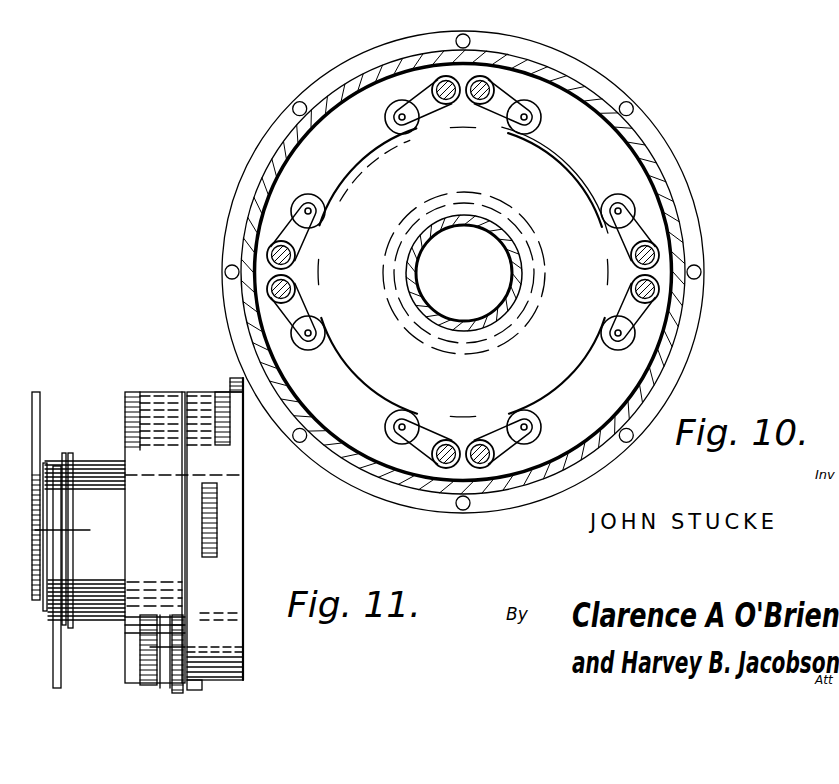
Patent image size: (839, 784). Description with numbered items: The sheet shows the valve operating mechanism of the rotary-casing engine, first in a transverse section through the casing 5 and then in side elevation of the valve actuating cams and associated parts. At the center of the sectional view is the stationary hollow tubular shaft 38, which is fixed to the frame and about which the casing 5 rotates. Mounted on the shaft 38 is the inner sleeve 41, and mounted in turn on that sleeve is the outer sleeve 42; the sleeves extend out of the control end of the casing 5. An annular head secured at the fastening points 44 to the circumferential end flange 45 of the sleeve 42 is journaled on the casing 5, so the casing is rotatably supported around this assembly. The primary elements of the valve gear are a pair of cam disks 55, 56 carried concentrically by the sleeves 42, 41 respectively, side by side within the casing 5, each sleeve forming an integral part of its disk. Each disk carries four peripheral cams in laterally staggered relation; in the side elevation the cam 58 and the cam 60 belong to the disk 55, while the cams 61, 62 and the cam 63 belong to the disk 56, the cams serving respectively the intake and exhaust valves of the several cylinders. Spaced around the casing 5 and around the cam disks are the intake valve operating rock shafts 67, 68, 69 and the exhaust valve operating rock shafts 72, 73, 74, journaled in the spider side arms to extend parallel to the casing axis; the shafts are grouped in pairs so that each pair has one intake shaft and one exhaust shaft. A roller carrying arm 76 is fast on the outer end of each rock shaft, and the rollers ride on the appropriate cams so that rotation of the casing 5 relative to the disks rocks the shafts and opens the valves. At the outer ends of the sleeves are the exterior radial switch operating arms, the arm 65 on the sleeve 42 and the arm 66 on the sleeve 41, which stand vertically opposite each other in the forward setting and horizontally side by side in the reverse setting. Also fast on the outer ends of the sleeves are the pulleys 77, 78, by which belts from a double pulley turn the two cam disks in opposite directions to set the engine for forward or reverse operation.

In FIG. 10, the casing 5 is at (648, 144).
In FIG. 10, the hollow tubular shaft 38 is at (493, 235).
In FIG. 10, the securing means 44 is at (633, 104).
In FIG. 10, the circumferential end flange 45 is at (595, 80).
In FIG. 10, the cam disk 55 is at (545, 147).
In FIG. 11, the cam disk 55 is at (155, 614).
In FIG. 10, the cam disk 56 is at (557, 185).
In FIG. 11, the cam disk 56 is at (243, 553).
In FIG. 10, the intake valve operating rock shaft 67 is at (441, 80).
In FIG. 10, the exhaust valve operating rock shaft 72 is at (483, 78).
In FIG. 10, the intake valve operating rock shaft 68 is at (270, 250).
In FIG. 10, the exhaust valve operating rock shaft 73 is at (270, 298).
In FIG. 10, the exhaust valve operating rock shaft 74 is at (660, 250).
In FIG. 10, the intake valve operating rock shaft 69 is at (658, 290).
In FIG. 10, the roller carrying arm 76 is at (635, 242).
In FIG. 11, the sleeve 41 is at (77, 532).
In FIG. 11, the sleeve 42 is at (98, 467).
In FIG. 11, the cam 58 is at (135, 393).
In FIG. 11, the cam 60 is at (187, 677).
In FIG. 11, the cam 61 is at (203, 684).
In FIG. 11, the cam 62 is at (242, 410).
In FIG. 11, the cam 63 is at (217, 518).
In FIG. 11, the switch operating arm 65 is at (62, 664).
In FIG. 11, the switch operating arm 66 is at (36, 392).
In FIG. 11, the pulley 77 is at (45, 463).
In FIG. 11, the pulley 78 is at (65, 455).